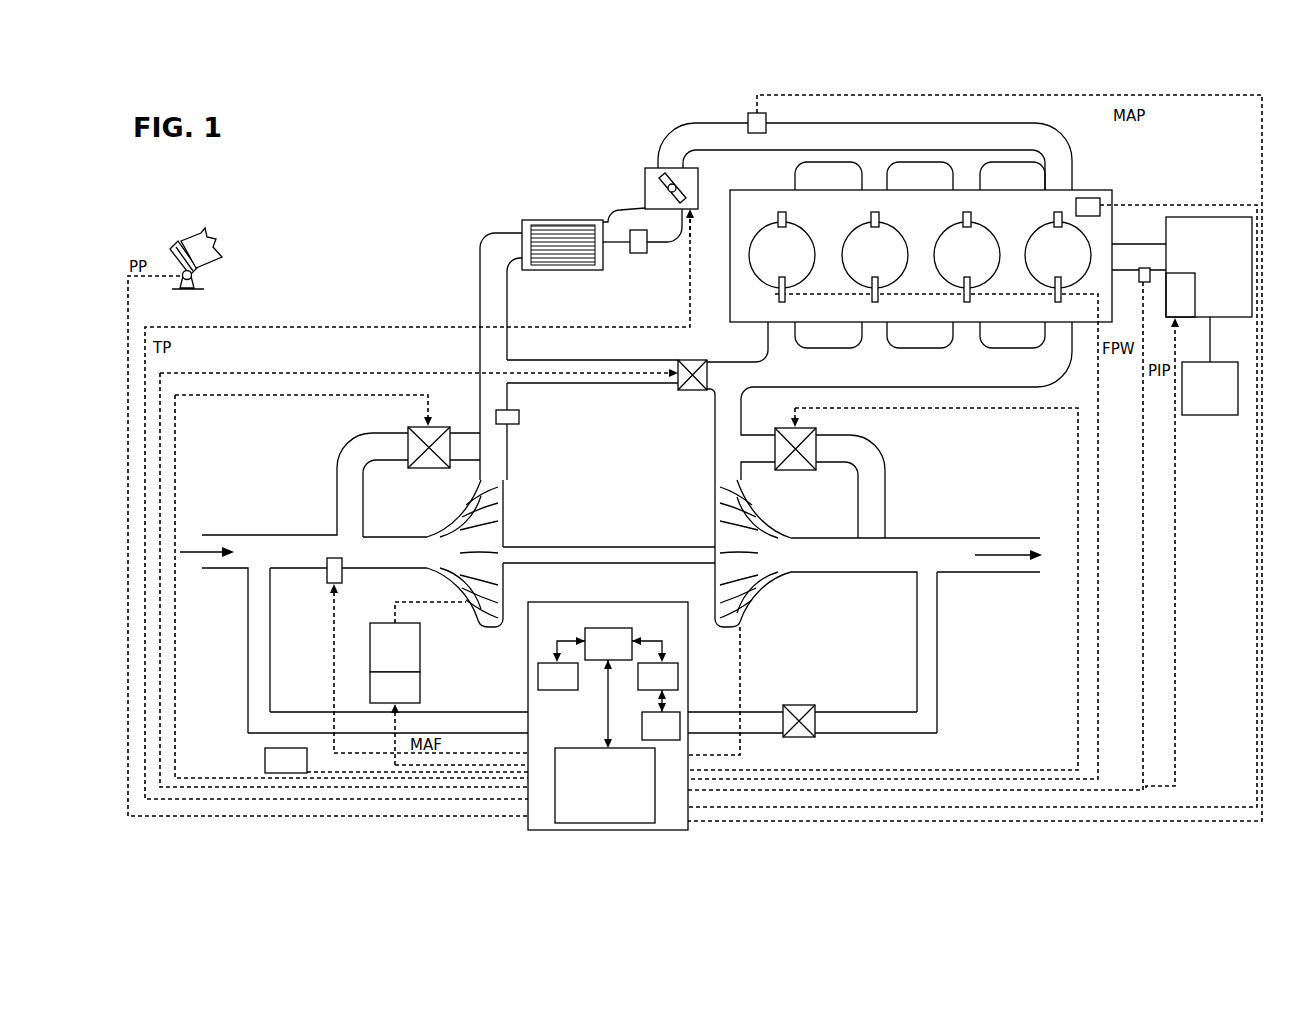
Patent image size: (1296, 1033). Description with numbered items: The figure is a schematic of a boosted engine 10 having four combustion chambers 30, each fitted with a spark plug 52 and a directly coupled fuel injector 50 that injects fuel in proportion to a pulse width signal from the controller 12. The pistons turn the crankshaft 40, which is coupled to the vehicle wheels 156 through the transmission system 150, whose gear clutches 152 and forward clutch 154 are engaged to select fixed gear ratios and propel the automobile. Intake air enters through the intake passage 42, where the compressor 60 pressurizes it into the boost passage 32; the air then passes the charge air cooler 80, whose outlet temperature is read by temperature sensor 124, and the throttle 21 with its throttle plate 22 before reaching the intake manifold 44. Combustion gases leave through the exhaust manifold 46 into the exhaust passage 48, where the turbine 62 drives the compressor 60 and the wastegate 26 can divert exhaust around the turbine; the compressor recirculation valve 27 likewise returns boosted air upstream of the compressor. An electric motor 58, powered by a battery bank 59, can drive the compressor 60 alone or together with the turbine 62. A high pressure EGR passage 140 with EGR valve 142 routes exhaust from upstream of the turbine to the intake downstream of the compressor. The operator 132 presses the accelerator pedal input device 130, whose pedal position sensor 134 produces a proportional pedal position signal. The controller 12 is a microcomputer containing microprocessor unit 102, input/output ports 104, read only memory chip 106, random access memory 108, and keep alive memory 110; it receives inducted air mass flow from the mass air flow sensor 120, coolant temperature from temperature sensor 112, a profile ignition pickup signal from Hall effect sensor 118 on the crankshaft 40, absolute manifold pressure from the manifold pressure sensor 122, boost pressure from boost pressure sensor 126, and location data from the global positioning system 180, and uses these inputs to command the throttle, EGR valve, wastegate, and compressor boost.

The engine 10 is at (1010, 216).
The controller 12 is at (683, 627).
The throttle 21 is at (691, 214).
The throttle plate 22 is at (689, 204).
The wastegate 26 is at (816, 441).
The compressor recirculation valve 27 is at (408, 433).
The combustion chamber 30 is at (791, 264).
The boost passage 32 is at (507, 313).
The crankshaft 40 is at (1126, 244).
The intake passage 42 is at (256, 561).
The intake manifold 44 is at (813, 144).
The exhaust manifold 46 is at (784, 379).
The exhaust passage 48 is at (856, 564).
The fuel injector 50 is at (779, 300).
The spark plug 52 is at (787, 214).
The electric motor 58 is at (404, 653).
The battery bank 59 is at (404, 697).
The compressor 60 is at (465, 598).
The turbine 62 is at (753, 508).
The charge air cooler 80 is at (529, 222).
The microprocessor unit 102 is at (557, 641).
The input/output ports 104 is at (643, 817).
The read only memory chip 106 is at (538, 680).
The random access memory 108 is at (678, 667).
The keep alive memory 110 is at (681, 716).
The temperature sensor 112 is at (1095, 197).
The Hall effect sensor 118 is at (1142, 284).
The MAF sensor 120 is at (343, 578).
The manifold pressure sensor 122 is at (766, 116).
The temperature sensor 124 is at (640, 253).
The boost pressure sensor 126 is at (517, 424).
The input device 130 is at (176, 254).
The vehicle operator 132 is at (215, 247).
The pedal position sensor 134 is at (198, 278).
The EGR passage 140 is at (590, 361).
The EGR valve 142 is at (697, 361).
The transmission system 150 is at (1222, 256).
The gear clutches 152 is at (1193, 305).
The forward clutch 154 is at (797, 706).
The vehicle wheels 156 is at (1221, 397).
The global positioning system 180 is at (286, 760).